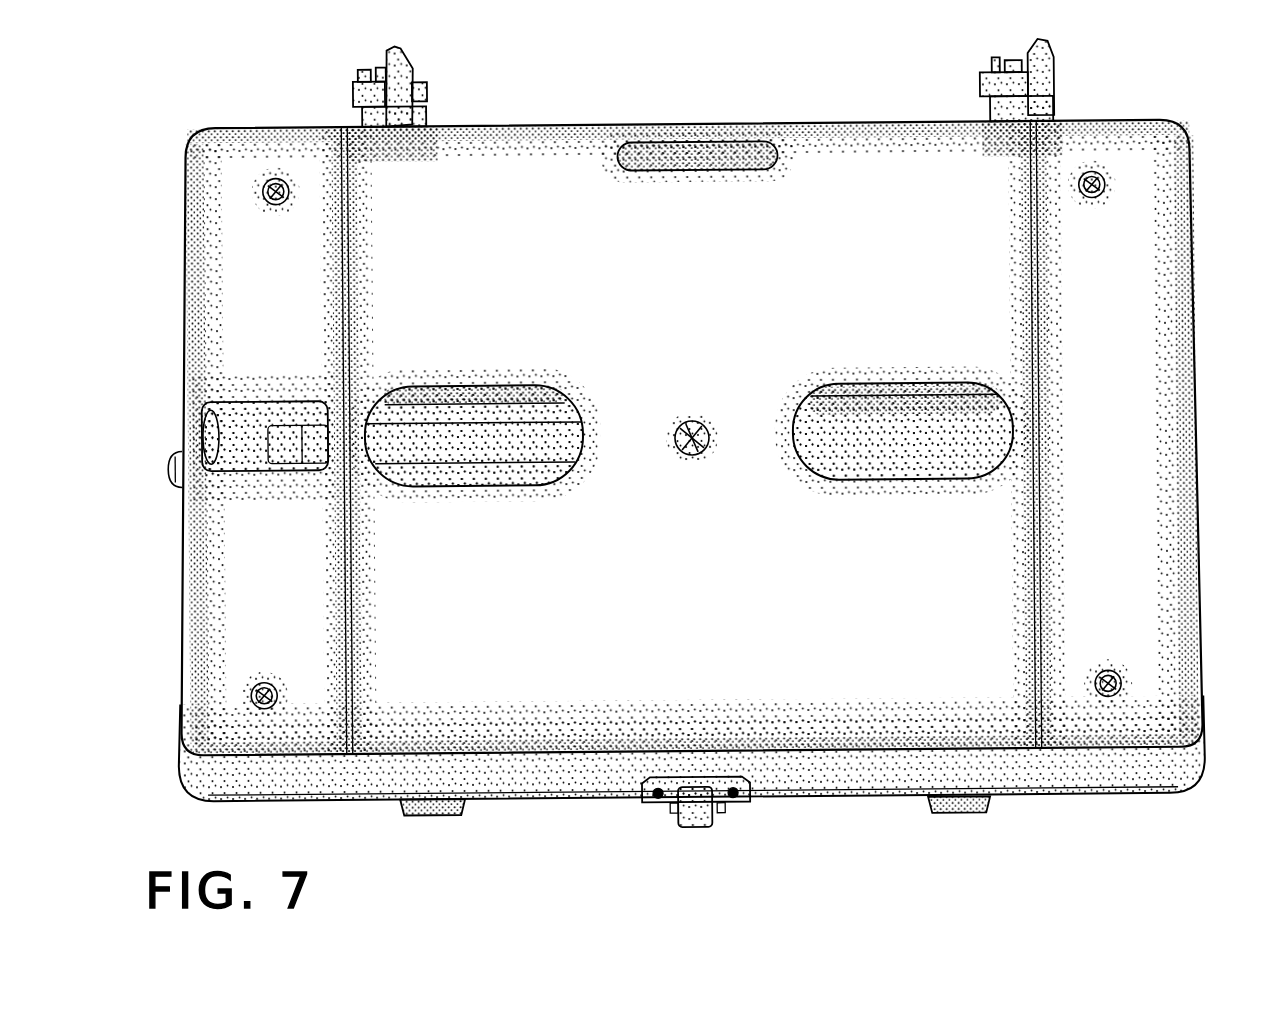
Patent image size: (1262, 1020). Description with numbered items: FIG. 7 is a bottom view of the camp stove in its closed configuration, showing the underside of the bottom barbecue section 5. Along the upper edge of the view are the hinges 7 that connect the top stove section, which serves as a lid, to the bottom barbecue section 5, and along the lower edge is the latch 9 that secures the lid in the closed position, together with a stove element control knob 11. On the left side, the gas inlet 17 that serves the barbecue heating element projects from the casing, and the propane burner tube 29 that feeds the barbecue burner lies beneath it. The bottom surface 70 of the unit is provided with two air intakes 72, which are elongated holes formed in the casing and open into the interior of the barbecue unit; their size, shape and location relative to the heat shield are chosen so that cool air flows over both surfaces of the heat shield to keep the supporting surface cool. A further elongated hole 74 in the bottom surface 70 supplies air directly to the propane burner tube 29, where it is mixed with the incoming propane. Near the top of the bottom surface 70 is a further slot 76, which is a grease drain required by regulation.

The bottom barbecue section 5 is at (1189, 521).
The hinges 7 is at (356, 86).
The latch 9 is at (710, 818).
The stove element control knobs 11 is at (974, 815).
The gas inlet 17 is at (209, 400).
The burner tube 29 is at (244, 458).
The bottom surface 70 is at (505, 163).
The air intakes 72 is at (372, 393).
The elongated hole 74 is at (228, 398).
The slot 76 is at (696, 139).